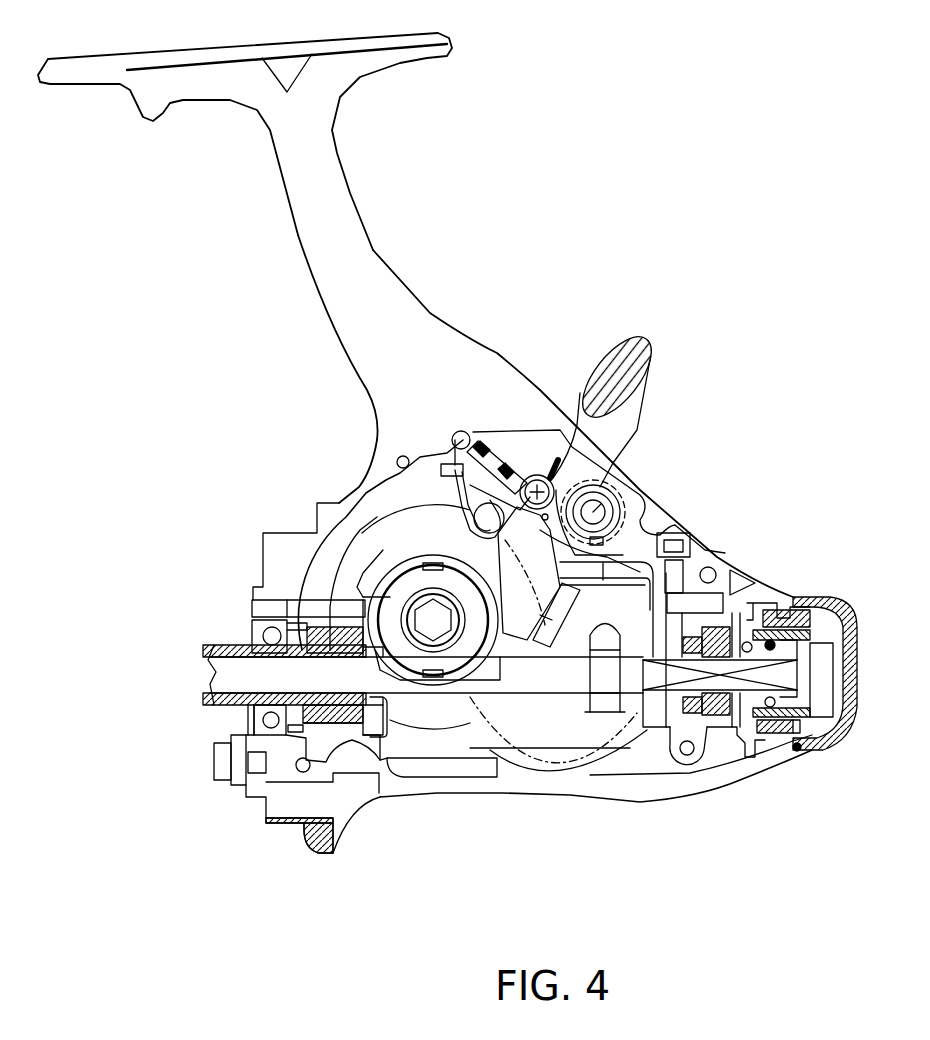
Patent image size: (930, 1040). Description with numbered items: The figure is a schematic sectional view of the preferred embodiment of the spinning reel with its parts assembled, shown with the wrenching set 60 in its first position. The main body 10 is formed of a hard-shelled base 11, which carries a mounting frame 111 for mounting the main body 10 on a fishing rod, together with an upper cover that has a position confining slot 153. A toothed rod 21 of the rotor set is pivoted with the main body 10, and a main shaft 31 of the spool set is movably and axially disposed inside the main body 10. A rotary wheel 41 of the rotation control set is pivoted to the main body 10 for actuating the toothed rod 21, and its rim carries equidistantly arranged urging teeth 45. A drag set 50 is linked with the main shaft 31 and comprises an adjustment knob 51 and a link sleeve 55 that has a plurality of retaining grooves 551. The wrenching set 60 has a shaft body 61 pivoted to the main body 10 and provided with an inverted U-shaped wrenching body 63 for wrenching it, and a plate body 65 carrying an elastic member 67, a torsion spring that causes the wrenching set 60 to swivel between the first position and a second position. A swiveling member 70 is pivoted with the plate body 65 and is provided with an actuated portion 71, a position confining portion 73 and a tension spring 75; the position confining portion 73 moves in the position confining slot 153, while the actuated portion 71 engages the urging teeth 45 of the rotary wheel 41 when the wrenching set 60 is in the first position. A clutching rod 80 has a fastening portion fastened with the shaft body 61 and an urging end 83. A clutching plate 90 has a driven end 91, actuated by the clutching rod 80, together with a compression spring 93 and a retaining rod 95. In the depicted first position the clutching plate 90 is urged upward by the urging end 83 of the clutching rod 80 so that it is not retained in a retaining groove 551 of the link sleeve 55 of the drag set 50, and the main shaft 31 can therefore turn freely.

The main body 10 is at (412, 197).
The base 11 is at (420, 340).
The mounting frame 111 is at (386, 63).
The toothed rod 21 is at (252, 633).
The main shaft 31 is at (223, 680).
The rotary wheel 41 is at (410, 735).
The urging teeth 45 is at (357, 603).
The drag set 50 is at (858, 880).
The adjustment knob 51 is at (837, 733).
The link sleeve 55 is at (723, 690).
The retaining grooves 551 is at (747, 707).
The wrenching set 60 is at (632, 322).
The shaft body 61 is at (628, 492).
The wrenching body 63 is at (650, 347).
The plate body 65 is at (553, 475).
The elastic member 67 is at (443, 480).
The swiveling member 70 is at (500, 546).
The actuated portion 71 is at (512, 640).
The position confining portion 73 is at (534, 640).
The tension spring 75 is at (493, 460).
The clutching rod 80 is at (617, 560).
The urging end 83 is at (700, 568).
The clutching plate 90 is at (777, 383).
The driven end 91 is at (660, 547).
The compression spring 93 is at (715, 600).
The retaining rod 95 is at (748, 600).
The position confining slot 153 is at (573, 640).